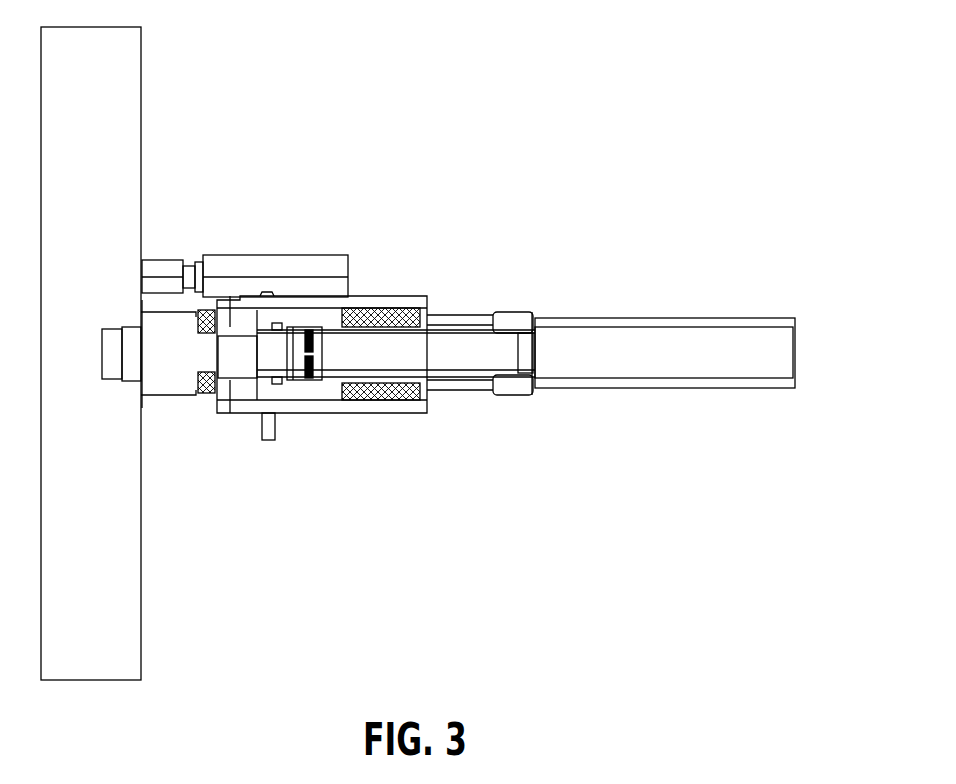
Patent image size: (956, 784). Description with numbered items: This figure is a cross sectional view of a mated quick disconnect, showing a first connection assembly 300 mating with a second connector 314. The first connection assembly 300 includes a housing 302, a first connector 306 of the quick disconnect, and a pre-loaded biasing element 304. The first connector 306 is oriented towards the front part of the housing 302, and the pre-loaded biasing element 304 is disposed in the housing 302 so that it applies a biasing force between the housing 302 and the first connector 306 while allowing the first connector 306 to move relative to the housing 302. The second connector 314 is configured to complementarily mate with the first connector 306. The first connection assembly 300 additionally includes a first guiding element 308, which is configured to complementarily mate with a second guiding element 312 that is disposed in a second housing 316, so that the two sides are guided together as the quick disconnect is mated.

The first connection assembly 300 is at (560, 208).
The housing 302 is at (313, 413).
The pre-loaded biasing element 304 is at (397, 400).
The first connector 306 is at (325, 318).
The first guiding element 308 is at (268, 255).
The second guiding element 312 is at (173, 258).
The second connector 314 is at (173, 396).
The second housing 316 is at (93, 668).